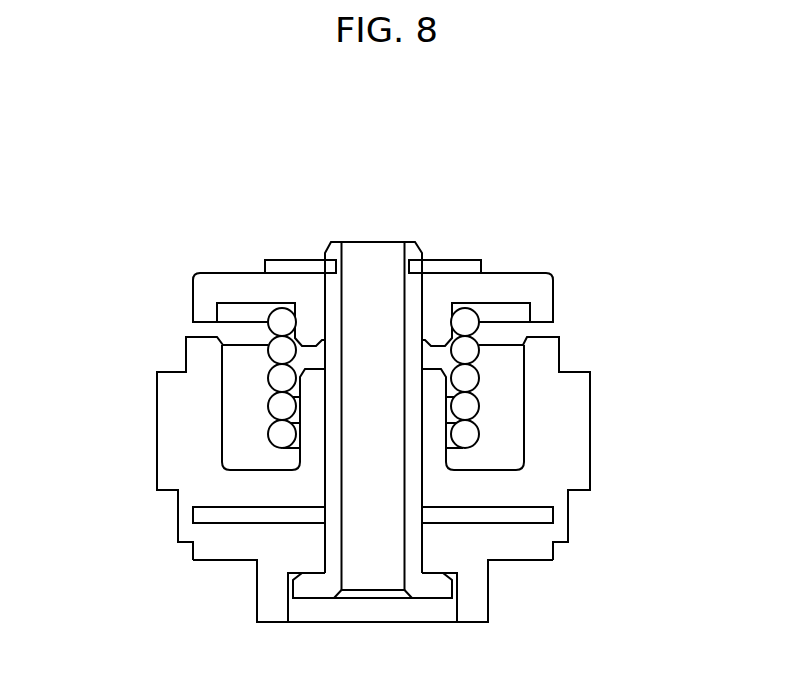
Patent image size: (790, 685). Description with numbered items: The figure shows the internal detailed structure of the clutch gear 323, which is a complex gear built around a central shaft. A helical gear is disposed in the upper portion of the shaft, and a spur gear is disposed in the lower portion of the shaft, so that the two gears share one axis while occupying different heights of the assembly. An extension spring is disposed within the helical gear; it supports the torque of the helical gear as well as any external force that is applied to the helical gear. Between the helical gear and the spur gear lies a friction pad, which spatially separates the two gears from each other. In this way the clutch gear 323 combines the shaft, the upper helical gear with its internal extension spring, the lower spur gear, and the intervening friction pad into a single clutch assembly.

The clutch gear 323 is at (397, 205).